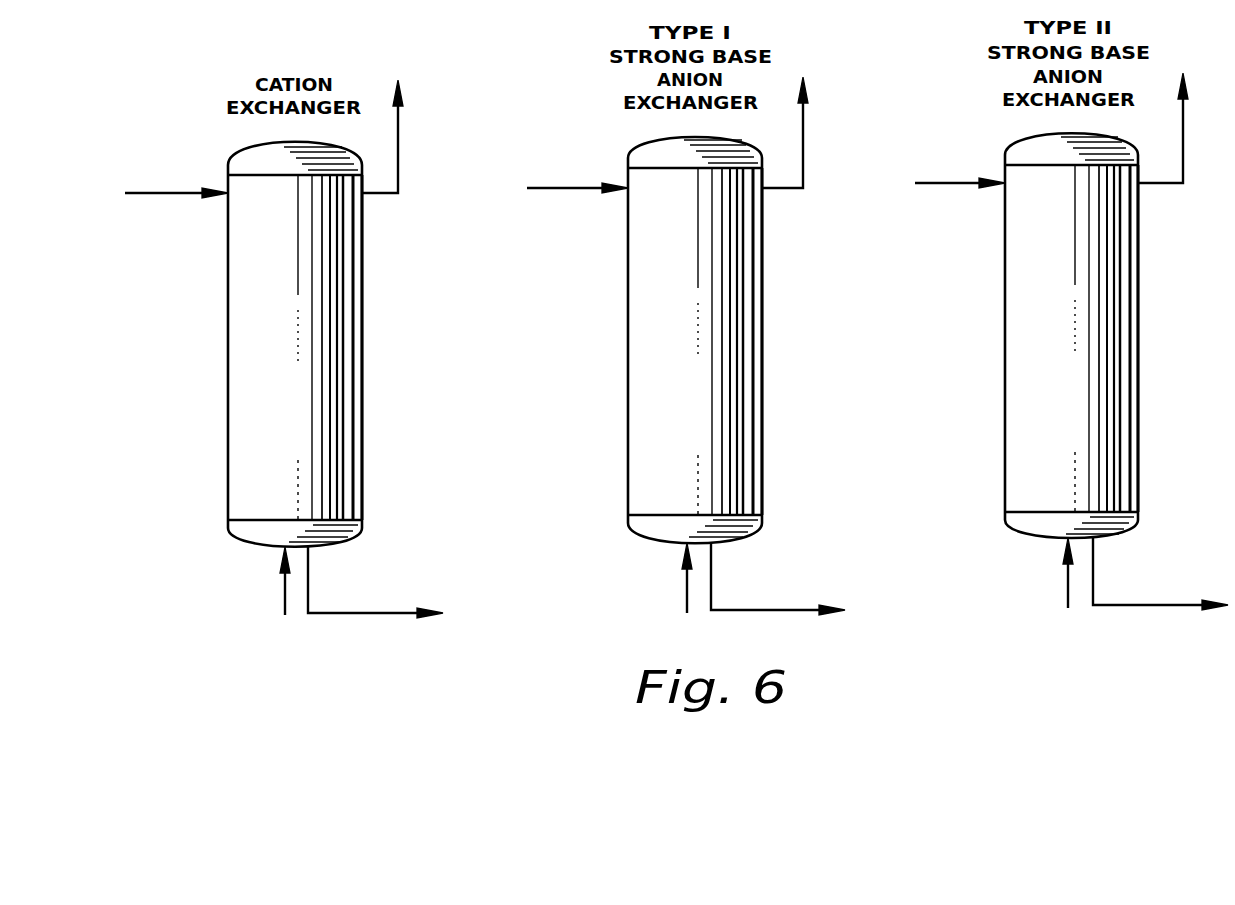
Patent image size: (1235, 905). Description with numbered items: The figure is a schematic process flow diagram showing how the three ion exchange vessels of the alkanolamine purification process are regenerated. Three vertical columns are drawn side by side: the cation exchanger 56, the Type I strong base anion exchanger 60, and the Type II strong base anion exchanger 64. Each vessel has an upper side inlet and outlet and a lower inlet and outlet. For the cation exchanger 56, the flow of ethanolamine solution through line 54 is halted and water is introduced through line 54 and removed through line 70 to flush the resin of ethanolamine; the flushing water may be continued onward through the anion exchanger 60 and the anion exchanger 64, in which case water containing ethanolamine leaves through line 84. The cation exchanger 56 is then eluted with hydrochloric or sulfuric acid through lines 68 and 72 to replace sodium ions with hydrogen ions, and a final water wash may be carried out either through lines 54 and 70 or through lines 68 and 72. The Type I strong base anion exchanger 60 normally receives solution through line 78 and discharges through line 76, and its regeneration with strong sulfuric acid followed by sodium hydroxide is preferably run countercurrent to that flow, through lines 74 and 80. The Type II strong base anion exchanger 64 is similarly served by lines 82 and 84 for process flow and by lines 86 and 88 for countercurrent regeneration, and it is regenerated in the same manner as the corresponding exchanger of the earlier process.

The cation exchanger 56 is at (282, 499).
The line 54 is at (170, 196).
The line 72 is at (402, 160).
The line 68 is at (282, 590).
The line 70 is at (376, 612).
The Type I strong base anion exchanger 60 is at (683, 495).
The line 78 is at (572, 190).
The line 80 is at (805, 153).
The line 74 is at (684, 589).
The line 76 is at (778, 608).
The Type II strong base anion exchanger 64 is at (1063, 492).
The line 82 is at (958, 188).
The line 88 is at (1172, 190).
The line 86 is at (1064, 585).
The line 84 is at (1160, 604).